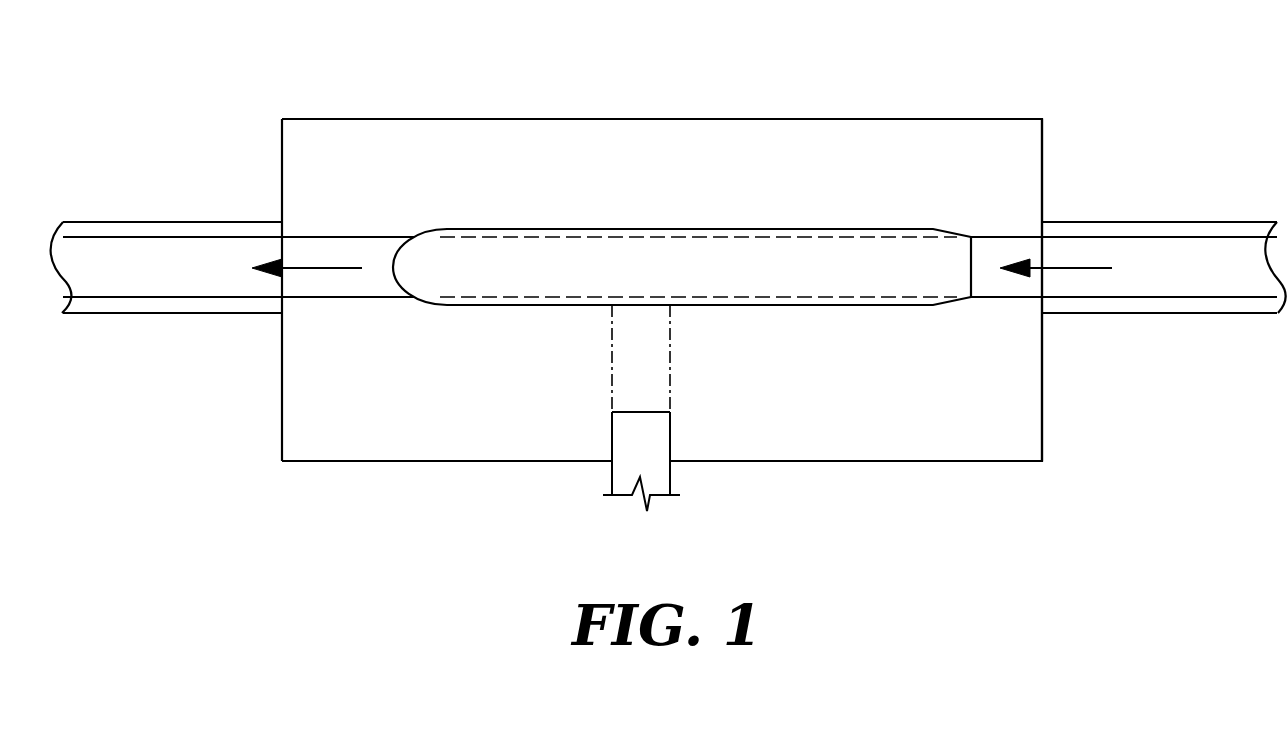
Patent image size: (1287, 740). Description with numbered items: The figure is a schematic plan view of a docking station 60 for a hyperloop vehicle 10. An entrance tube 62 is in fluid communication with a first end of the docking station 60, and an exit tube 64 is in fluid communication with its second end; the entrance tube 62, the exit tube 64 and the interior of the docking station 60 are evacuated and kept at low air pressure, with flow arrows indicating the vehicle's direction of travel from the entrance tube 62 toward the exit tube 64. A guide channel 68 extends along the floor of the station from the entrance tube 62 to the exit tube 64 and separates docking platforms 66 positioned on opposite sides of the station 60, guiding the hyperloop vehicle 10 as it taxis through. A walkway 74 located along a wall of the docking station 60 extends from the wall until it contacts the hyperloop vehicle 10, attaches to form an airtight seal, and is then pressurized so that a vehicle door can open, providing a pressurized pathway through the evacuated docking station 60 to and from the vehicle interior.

The hyperloop vehicle 10 is at (862, 305).
The docking station 60 is at (901, 100).
The entrance tube 62 is at (1183, 222).
The exit tube 64 is at (125, 222).
The docking platforms 66 is at (355, 161).
The guide channel 68 is at (1000, 237).
The walkway 74 is at (665, 435).